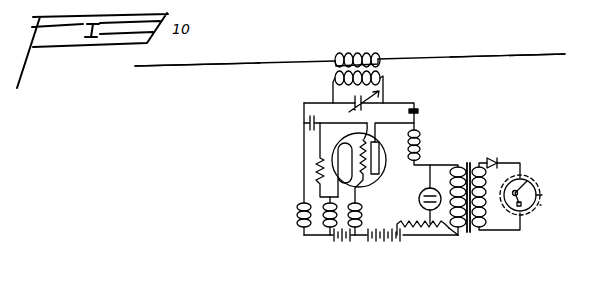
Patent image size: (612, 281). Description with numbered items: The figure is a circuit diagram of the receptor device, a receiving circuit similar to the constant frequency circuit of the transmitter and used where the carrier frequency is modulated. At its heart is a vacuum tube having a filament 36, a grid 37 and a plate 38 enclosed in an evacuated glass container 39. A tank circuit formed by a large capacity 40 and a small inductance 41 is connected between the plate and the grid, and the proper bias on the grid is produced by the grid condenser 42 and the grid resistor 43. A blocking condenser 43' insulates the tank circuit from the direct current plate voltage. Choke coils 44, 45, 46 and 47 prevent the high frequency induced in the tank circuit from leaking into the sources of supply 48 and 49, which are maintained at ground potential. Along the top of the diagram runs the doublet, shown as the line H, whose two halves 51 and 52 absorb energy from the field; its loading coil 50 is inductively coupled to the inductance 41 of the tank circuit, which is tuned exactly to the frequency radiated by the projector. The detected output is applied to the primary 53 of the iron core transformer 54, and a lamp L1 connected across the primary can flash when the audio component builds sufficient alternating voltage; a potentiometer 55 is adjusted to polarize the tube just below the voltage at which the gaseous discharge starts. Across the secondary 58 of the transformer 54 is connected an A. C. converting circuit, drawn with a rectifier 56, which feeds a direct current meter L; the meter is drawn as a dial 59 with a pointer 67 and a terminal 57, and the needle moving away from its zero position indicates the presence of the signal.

The antenna line H is at (478, 55).
The half of the doublet 51 is at (266, 64).
The half of the doublet 52 is at (514, 57).
The loading coil 50 is at (362, 55).
The small inductance 41 is at (333, 82).
The large capacity 40 is at (381, 98).
The blocking condenser 43' is at (429, 103).
The grid condenser 42 is at (309, 120).
The grid 37 is at (367, 128).
The plate 38 is at (378, 143).
The evacuated glass container 39 is at (338, 152).
The filament 36 is at (362, 182).
The grid resistor 43 is at (306, 160).
The choke coil 44 is at (297, 216).
The choke coil 45 is at (326, 230).
The choke coil 46 is at (362, 213).
The source of supply 48 is at (338, 244).
The source of supply 49 is at (388, 243).
The potentiometer 55 is at (428, 236).
The lamp L1 is at (418, 194).
The choke coil 47 is at (421, 140).
The iron core transformer 54 is at (468, 165).
The primary 53 is at (456, 237).
The rectifier 56 is at (498, 161).
The secondary 58 is at (500, 231).
The meter 59 is at (536, 186).
The pointer 67 is at (528, 181).
The direct current meter L is at (542, 191).
The meter terminal 57 is at (541, 205).